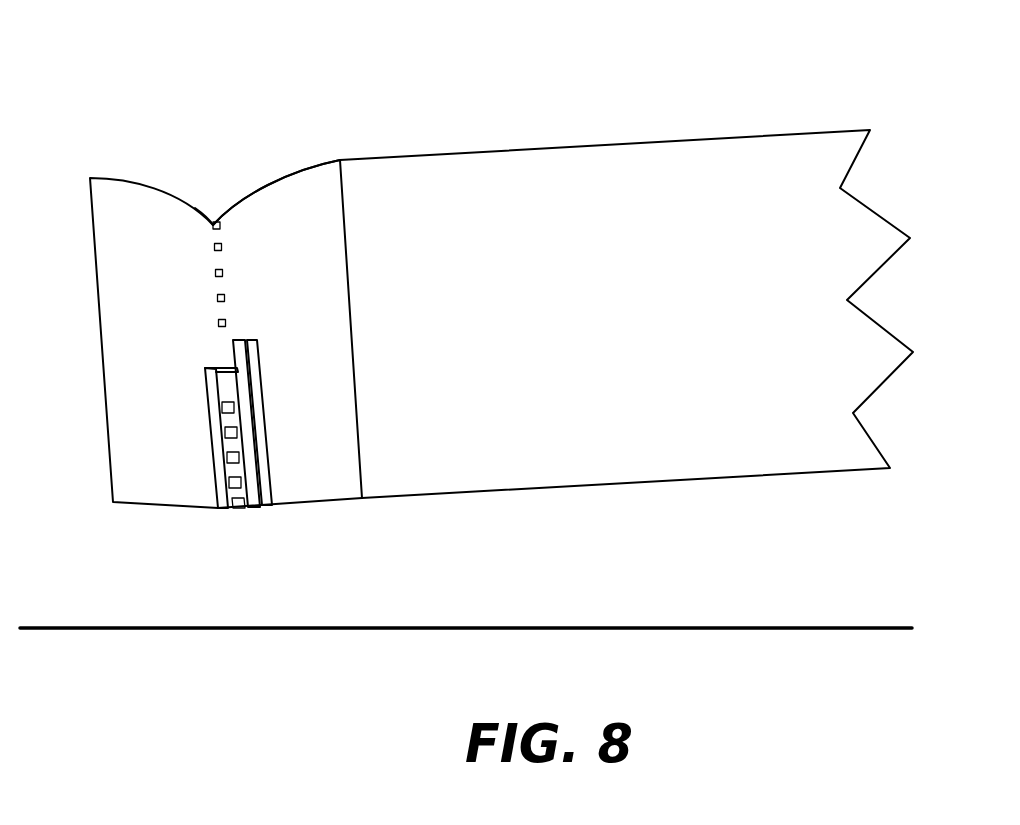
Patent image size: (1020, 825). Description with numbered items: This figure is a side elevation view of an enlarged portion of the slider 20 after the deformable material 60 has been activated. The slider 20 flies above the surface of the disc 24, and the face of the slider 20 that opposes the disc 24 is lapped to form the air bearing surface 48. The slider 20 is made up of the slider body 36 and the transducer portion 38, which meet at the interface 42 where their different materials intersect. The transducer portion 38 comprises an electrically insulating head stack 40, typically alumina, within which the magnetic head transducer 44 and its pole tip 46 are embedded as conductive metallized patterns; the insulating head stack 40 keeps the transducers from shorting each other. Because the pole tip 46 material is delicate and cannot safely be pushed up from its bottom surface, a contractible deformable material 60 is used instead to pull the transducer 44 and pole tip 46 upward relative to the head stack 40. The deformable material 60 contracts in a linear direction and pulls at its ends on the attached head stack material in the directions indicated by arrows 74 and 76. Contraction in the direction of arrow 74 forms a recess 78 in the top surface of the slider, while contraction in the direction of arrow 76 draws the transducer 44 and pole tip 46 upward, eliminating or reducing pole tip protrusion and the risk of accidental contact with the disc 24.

The slider 20 is at (626, 266).
The disc 24 is at (613, 666).
The slider body 36 is at (716, 329).
The transducer portion 38 is at (212, 264).
The head stack 40 is at (143, 226).
The interface 42 is at (357, 402).
The transducer 44 is at (190, 420).
The pole tip 46 is at (215, 535).
The air bearing surface 48 is at (657, 560).
The deformable material 60 is at (215, 225).
The arrow 74 is at (191, 190).
The arrow 76 is at (196, 255).
The recess 78 is at (214, 222).